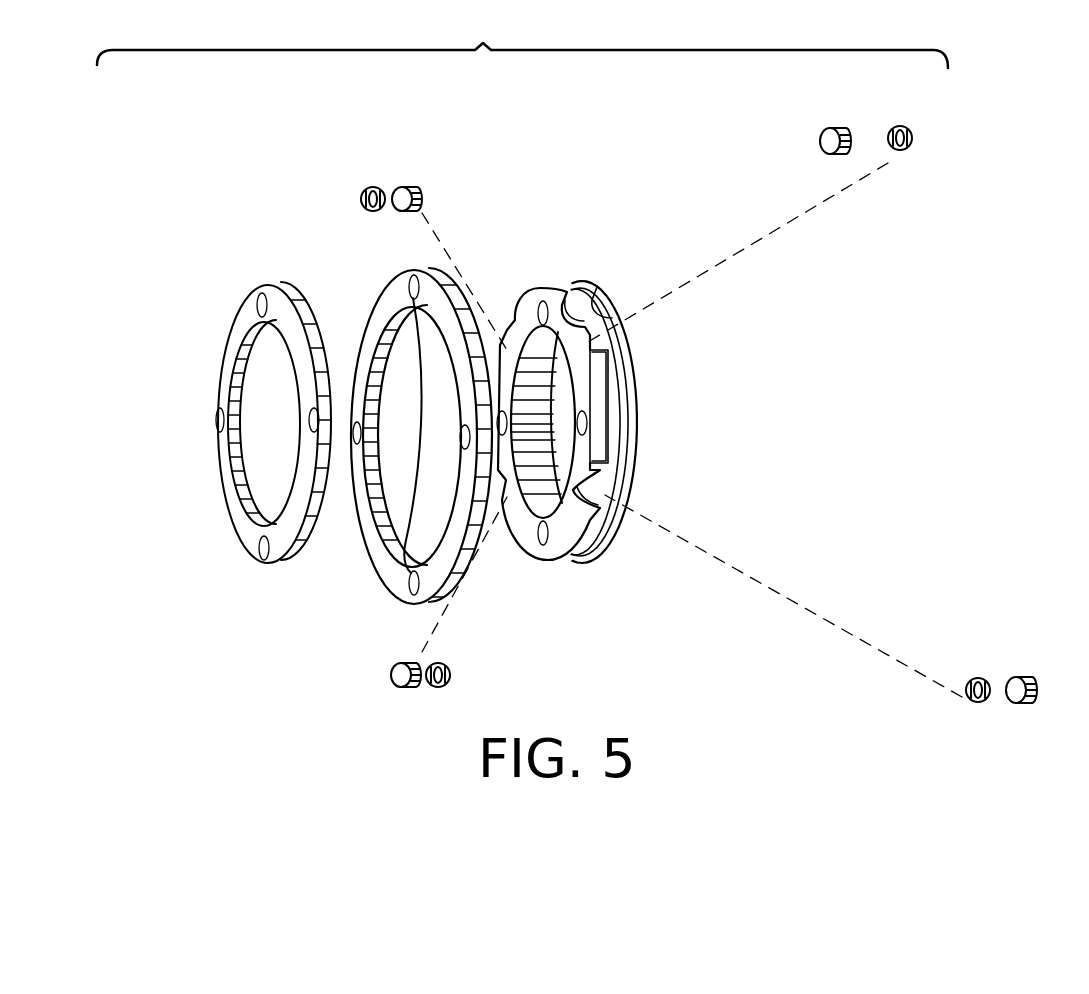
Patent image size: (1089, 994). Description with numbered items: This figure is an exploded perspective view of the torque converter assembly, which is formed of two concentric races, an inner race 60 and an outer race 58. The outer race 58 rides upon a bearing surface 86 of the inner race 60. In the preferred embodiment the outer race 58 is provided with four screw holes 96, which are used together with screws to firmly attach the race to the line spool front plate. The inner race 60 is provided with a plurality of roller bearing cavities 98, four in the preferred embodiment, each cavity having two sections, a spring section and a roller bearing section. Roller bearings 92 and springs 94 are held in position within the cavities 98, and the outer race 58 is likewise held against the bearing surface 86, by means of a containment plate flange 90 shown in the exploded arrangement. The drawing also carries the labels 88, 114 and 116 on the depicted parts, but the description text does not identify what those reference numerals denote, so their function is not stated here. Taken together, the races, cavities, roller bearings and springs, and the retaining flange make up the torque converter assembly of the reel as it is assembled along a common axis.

The ring 58 is at (382, 597).
The housing 60 is at (560, 560).
The land 86 is at (604, 444).
The flange 88 is at (618, 380).
The ring 90 is at (267, 568).
The pin 92 is at (410, 187).
The retaining ring 94 is at (372, 187).
The wire 96 is at (463, 432).
The notch 98 is at (598, 342).
The aperture 114 is at (218, 420).
The aperture 116 is at (538, 288).